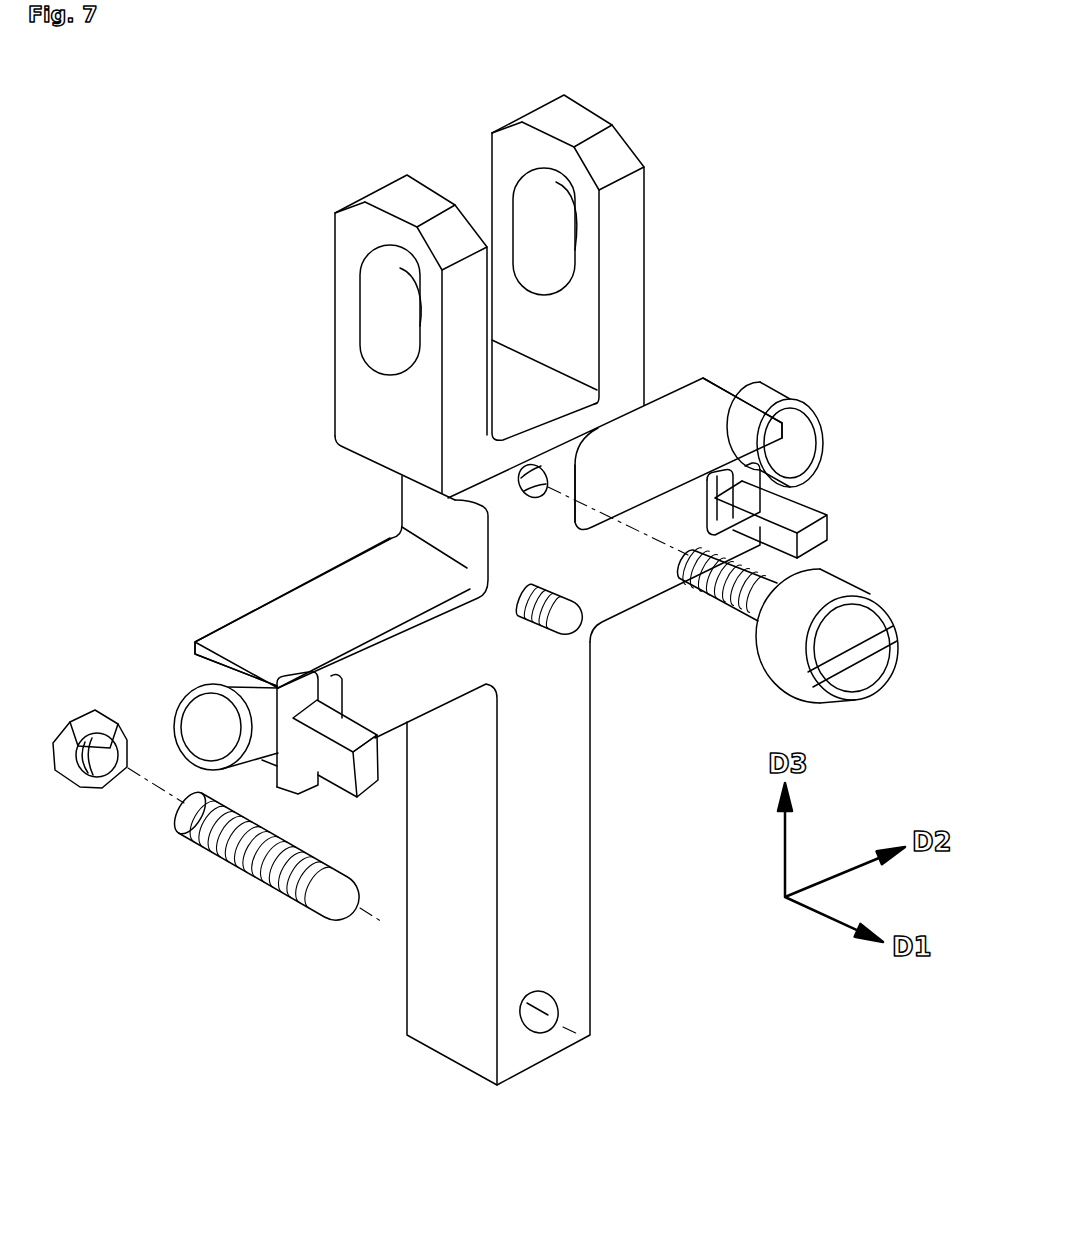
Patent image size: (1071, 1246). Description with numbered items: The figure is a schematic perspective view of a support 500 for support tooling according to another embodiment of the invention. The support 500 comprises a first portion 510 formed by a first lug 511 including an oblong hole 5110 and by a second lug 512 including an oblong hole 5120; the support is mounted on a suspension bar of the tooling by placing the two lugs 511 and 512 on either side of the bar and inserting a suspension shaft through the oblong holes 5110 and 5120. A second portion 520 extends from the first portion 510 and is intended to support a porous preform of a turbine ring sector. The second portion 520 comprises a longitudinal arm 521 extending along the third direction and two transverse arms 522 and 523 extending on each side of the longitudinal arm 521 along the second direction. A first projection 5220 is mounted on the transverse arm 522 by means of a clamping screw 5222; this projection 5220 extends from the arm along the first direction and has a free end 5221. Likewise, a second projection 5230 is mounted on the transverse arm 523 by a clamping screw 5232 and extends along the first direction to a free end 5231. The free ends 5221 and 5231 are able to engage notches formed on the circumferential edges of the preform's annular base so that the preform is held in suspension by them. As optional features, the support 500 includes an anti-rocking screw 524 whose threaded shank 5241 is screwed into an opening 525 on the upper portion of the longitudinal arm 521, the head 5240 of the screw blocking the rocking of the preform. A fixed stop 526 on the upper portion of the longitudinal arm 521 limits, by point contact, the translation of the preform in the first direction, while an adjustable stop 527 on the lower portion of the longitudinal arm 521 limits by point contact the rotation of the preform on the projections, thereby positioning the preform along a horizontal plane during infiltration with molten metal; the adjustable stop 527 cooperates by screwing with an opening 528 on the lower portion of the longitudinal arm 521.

The support 500 is at (294, 249).
The first portion 510 is at (658, 153).
The first lug 511 is at (398, 398).
The oblong hole 5110 is at (386, 338).
The second lug 512 is at (618, 288).
The oblong hole 5120 is at (535, 200).
The second portion 520 is at (616, 769).
The longitudinal arm 521 is at (570, 892).
The transverse arm 522 is at (287, 613).
The transverse arm 523 is at (675, 407).
The anti-rocking screw 524 is at (732, 659).
The head 5240 is at (787, 657).
The threaded shank 5241 is at (717, 593).
The opening 525 is at (547, 477).
The fixed stop 526 is at (537, 621).
The adjustable stop 527 is at (247, 866).
The opening 528 is at (558, 1009).
The first projection 5220 is at (292, 710).
The free end 5221 is at (331, 772).
The clamping screw 5222 is at (192, 707).
The second projection 5230 is at (807, 507).
The free end 5231 is at (817, 533).
The clamping screw 5232 is at (777, 397).